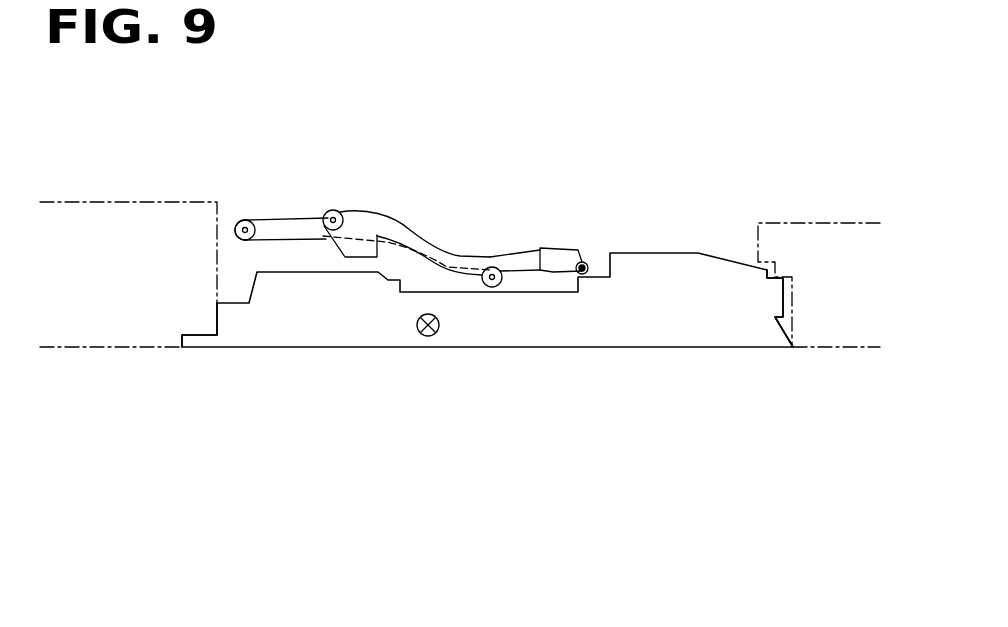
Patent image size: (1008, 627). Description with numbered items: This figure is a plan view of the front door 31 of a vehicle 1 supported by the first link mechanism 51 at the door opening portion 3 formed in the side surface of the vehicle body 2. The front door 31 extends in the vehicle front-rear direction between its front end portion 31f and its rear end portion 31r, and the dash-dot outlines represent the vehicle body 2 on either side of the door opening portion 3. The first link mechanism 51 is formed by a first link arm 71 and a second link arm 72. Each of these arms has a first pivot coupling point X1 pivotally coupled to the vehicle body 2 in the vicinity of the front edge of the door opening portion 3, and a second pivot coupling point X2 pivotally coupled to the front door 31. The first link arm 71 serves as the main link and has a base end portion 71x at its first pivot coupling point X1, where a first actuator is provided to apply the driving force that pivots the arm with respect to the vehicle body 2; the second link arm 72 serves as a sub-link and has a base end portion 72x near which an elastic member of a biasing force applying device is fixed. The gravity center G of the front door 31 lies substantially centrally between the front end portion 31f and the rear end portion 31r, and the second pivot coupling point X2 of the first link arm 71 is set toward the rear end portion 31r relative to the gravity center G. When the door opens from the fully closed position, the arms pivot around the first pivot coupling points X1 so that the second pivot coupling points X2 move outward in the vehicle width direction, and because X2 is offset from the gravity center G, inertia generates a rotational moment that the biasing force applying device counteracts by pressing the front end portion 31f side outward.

The vehicle 1 is at (101, 477).
The vehicle body 2 is at (75, 348).
The door opening portion 3 is at (214, 290).
The front door 31 is at (468, 350).
The front end portion 31f is at (228, 348).
The rear end portion 31r is at (770, 348).
The first link mechanism 51 is at (478, 182).
The first link arm 71 is at (530, 250).
The base end portion 71x is at (360, 258).
The second link arm 72 is at (385, 212).
The base end portion 72x is at (273, 222).
The first pivot coupling point X1 is at (245, 221).
The second pivot coupling point X2 is at (492, 267).
The gravity center G is at (430, 336).